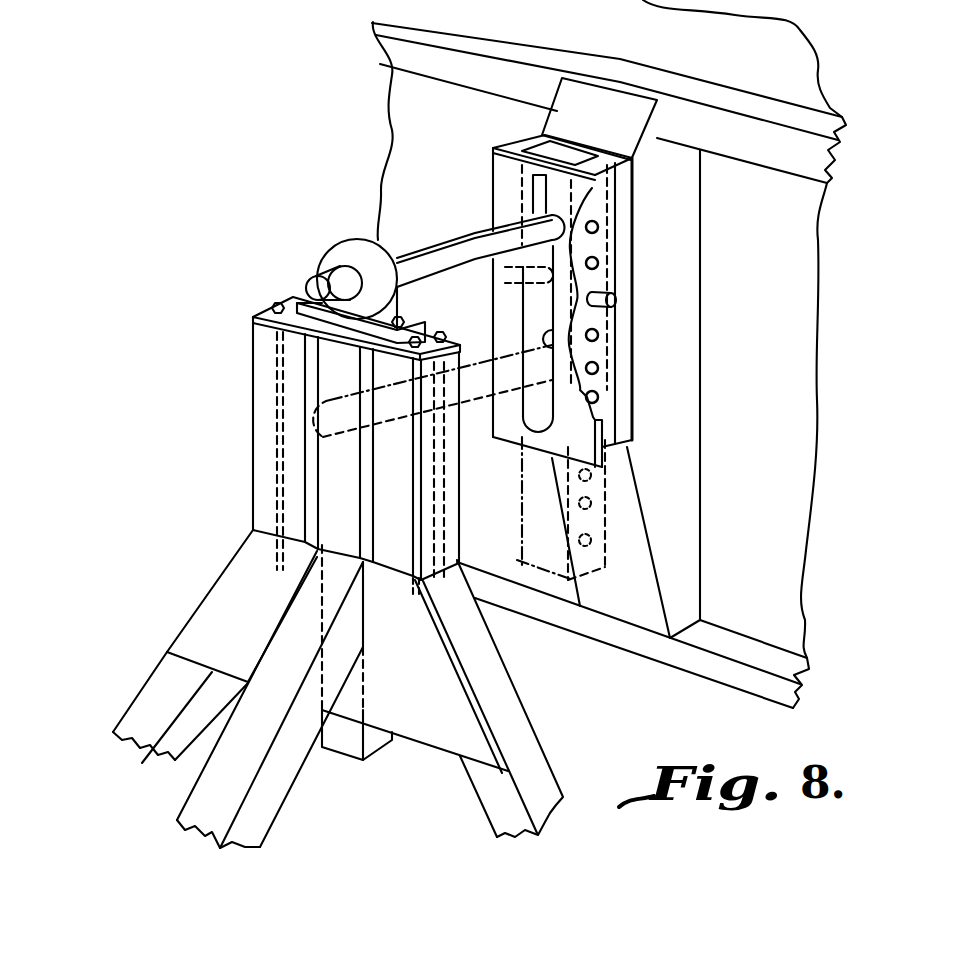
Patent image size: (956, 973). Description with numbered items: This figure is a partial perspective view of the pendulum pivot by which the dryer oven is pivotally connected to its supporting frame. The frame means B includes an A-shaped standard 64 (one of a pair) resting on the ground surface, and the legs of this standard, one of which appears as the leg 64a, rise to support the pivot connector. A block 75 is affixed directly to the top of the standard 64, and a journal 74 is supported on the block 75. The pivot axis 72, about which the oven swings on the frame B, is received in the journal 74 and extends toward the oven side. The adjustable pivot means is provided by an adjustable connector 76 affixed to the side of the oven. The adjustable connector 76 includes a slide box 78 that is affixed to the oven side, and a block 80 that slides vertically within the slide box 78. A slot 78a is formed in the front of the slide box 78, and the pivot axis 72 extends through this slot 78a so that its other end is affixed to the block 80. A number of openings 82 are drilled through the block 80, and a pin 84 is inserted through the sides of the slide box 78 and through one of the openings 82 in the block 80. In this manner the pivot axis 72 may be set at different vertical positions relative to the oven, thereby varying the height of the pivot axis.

The A-shaped standard 64 is at (492, 795).
The leg 64a is at (257, 826).
The pivot axis 72 is at (316, 283).
The journal 74 is at (353, 238).
The block 75 is at (260, 419).
The adjustable connector 76 is at (623, 239).
The slide box 78 is at (632, 194).
The slot 78a is at (552, 337).
The block 80 is at (605, 524).
The openings 82 is at (592, 503).
The pin 84 is at (618, 298).
The frame means B is at (155, 680).